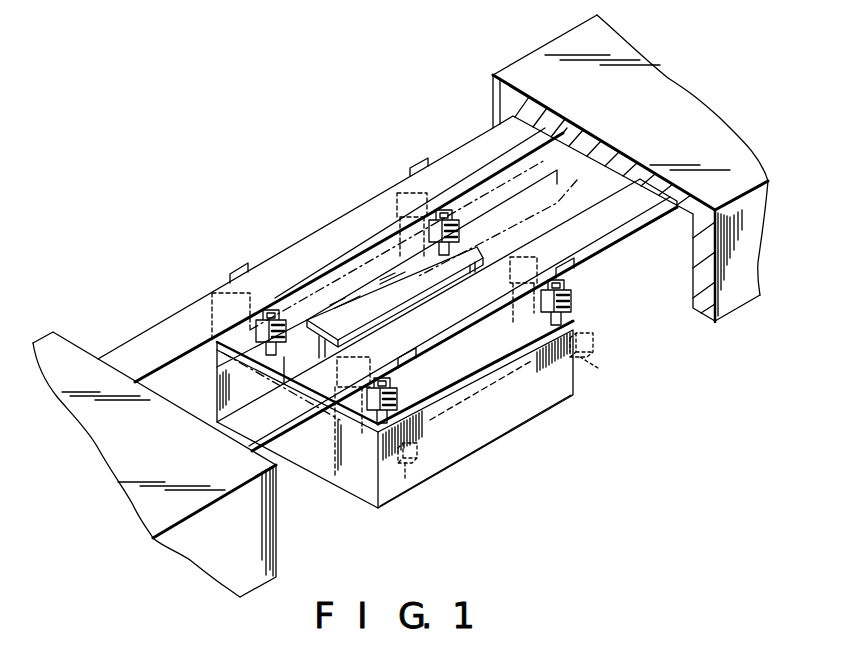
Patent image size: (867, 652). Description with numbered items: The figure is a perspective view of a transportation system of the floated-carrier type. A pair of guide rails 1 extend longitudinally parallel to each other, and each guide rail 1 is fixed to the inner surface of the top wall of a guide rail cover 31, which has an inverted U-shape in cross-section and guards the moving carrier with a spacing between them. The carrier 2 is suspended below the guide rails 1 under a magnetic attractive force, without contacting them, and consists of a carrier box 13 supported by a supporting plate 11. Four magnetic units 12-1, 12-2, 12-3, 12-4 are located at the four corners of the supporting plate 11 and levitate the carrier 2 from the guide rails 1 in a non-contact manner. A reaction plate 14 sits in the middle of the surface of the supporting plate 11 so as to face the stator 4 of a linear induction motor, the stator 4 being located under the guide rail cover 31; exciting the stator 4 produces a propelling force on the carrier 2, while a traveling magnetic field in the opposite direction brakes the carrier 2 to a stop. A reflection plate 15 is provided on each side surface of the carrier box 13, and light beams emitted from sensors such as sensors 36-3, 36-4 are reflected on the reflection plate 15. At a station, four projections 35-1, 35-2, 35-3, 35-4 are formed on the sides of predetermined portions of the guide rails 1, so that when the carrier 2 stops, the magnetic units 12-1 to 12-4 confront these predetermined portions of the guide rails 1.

The guide rail 1 is at (143, 348).
The carrier 2 is at (403, 400).
The stator 4 is at (343, 255).
The supporting plate 11 is at (352, 418).
The magnetic unit 12-1 is at (250, 335).
The magnetic unit 12-2 is at (447, 210).
The magnetic unit 12-3 is at (368, 420).
The magnetic unit 12-4 is at (570, 303).
The carrier box 13 is at (507, 423).
The reaction plate 14 is at (350, 303).
The reflection plate 15 is at (528, 367).
The guide rail cover 31 is at (533, 62).
The projection 35-1 is at (243, 250).
The projection 35-2 is at (415, 168).
The projection 35-3 is at (407, 367).
The projection 35-4 is at (582, 270).
The sensor 36-3 is at (408, 480).
The sensor 36-4 is at (598, 368).